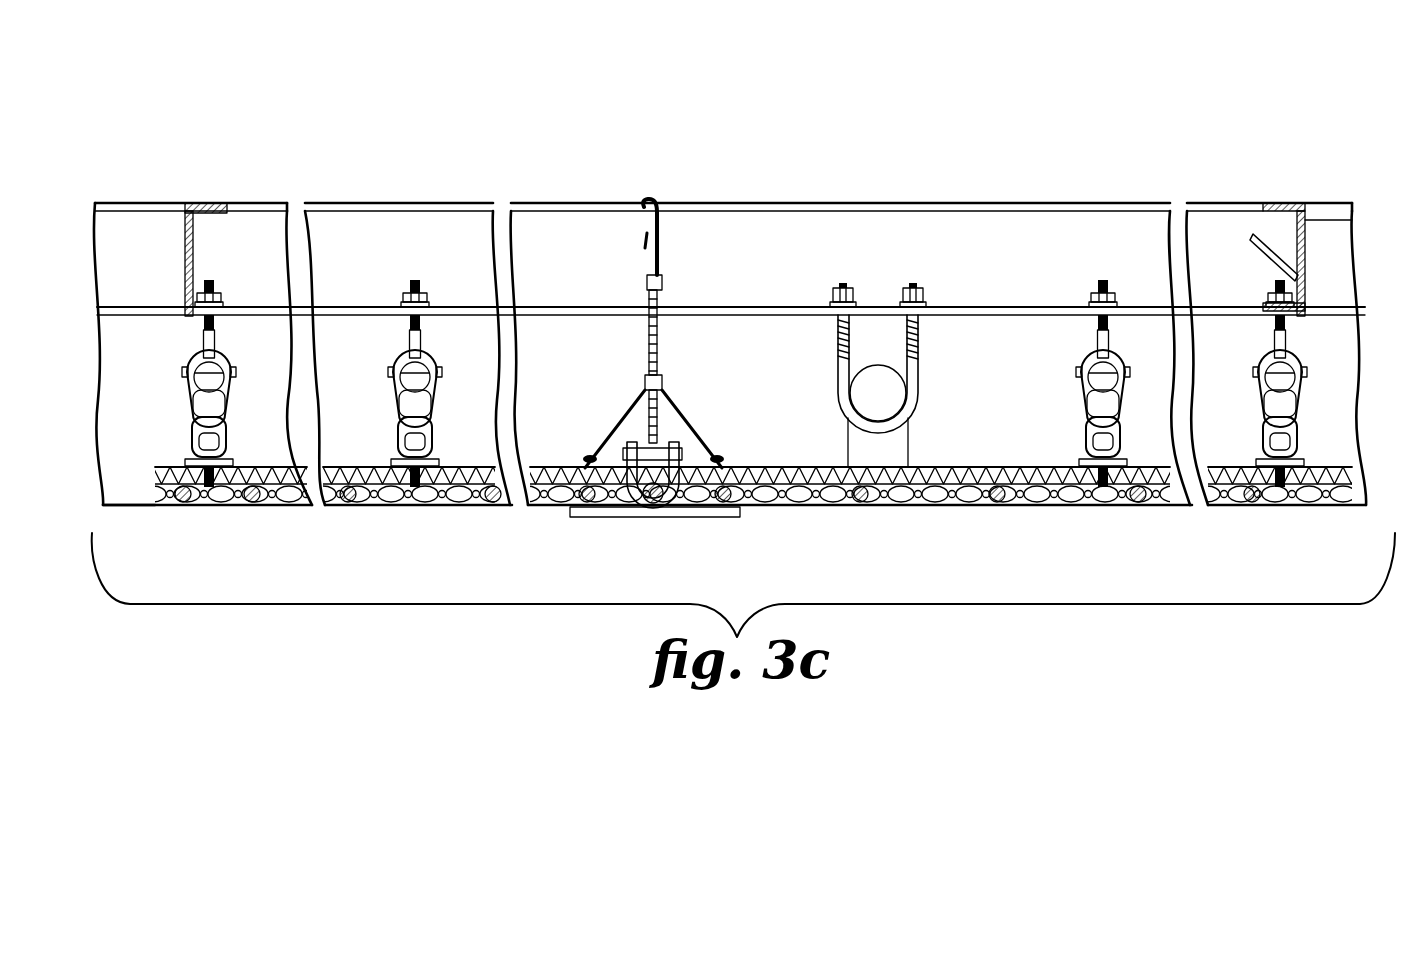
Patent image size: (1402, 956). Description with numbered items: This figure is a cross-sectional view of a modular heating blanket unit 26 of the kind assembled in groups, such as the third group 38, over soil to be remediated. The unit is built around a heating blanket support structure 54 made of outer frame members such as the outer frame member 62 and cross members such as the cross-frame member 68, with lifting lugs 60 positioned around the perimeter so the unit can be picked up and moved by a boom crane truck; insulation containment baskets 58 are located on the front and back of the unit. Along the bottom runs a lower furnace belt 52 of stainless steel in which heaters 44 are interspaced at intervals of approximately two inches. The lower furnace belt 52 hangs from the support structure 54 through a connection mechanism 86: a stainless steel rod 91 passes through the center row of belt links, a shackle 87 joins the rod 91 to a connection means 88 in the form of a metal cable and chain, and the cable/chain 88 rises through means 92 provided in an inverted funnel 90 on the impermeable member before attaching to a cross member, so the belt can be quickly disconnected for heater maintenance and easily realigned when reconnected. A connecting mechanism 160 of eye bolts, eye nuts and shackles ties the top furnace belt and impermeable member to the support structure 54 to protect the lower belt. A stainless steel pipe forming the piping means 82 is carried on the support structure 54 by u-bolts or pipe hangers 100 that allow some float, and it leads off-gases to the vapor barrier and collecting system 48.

The modular heating blanket unit 26 is at (666, 324).
The third group of modular heating blanket units 38 is at (1232, 333).
The heaters 44 is at (353, 507).
The vapor barrier and collecting system 48 is at (935, 317).
The lower furnace belt 52 is at (1048, 505).
The heating blanket support structure 54 is at (1012, 305).
The insulation containment baskets 58 is at (152, 217).
The lifting lugs 60 is at (1269, 243).
The outer frame member 62 is at (212, 205).
The cross-frame member 68 is at (972, 203).
The piping means 82 is at (893, 362).
The connection mechanism 86 is at (668, 351).
The shackle 87 is at (647, 513).
The connection means 88 is at (648, 323).
The inverted funnel 90 is at (690, 413).
The rod 91 is at (660, 510).
The means for passage of the cable/chain 92 is at (645, 382).
The u-bolts or pipe hangers 100 is at (910, 377).
The connecting mechanism 160 is at (245, 398).